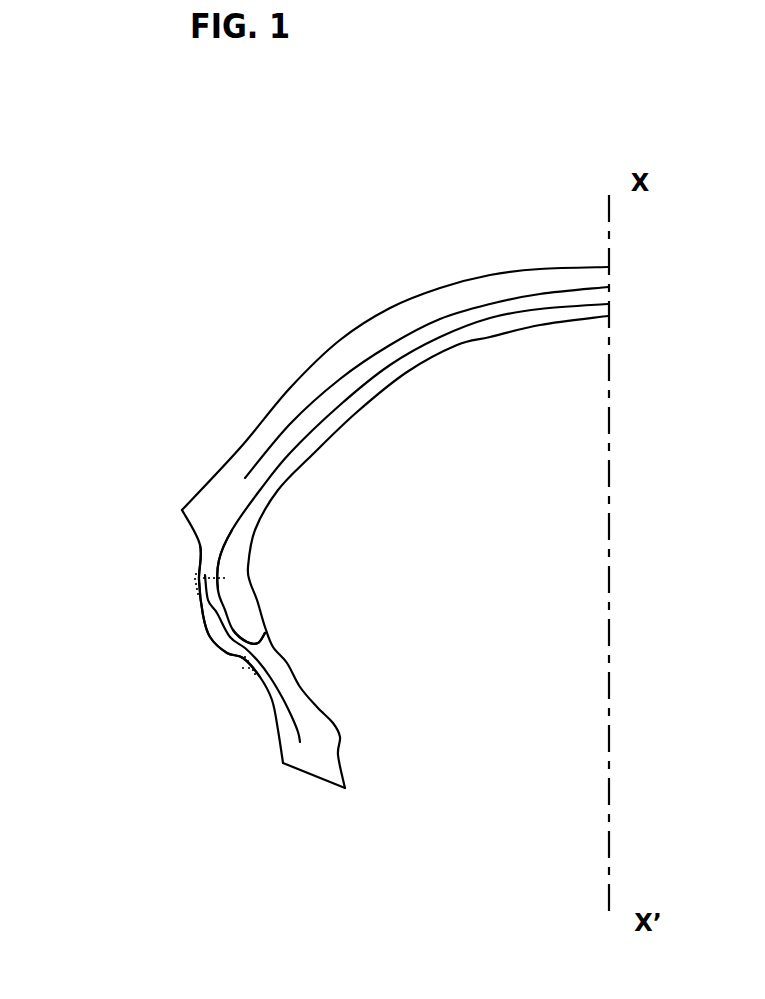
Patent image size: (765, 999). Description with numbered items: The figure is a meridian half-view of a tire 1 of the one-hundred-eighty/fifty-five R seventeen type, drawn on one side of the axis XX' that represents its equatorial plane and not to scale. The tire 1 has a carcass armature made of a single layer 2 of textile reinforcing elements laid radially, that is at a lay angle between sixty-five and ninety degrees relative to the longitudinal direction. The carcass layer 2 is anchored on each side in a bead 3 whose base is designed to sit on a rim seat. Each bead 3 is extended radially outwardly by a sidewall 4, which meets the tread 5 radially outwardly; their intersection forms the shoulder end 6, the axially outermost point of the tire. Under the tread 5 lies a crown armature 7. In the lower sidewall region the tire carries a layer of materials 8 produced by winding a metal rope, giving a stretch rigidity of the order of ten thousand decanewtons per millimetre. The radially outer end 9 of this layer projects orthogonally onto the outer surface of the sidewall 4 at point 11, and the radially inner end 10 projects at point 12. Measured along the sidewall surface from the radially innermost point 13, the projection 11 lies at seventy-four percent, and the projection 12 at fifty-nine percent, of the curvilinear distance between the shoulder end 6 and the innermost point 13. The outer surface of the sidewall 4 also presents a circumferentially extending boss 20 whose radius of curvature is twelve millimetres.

The tire 1 is at (245, 334).
The carcass layer 2 is at (289, 663).
The bead 3 is at (317, 730).
The sidewall 4 is at (174, 605).
The tread 5 is at (465, 277).
The shoulder end 6 is at (182, 510).
The crown armature 7 is at (403, 341).
The layer of materials 8 is at (230, 617).
The radially outer end of the layer of materials 9 is at (222, 578).
The radially inner end of the layer of materials 10 is at (266, 633).
The orthogonal projection of the radially outer end 11 is at (200, 583).
The orthogonal projection of the radially inner end 12 is at (253, 665).
The radially innermost point of the outer surface of the sidewall 13 is at (283, 763).
The boss 20 is at (196, 631).